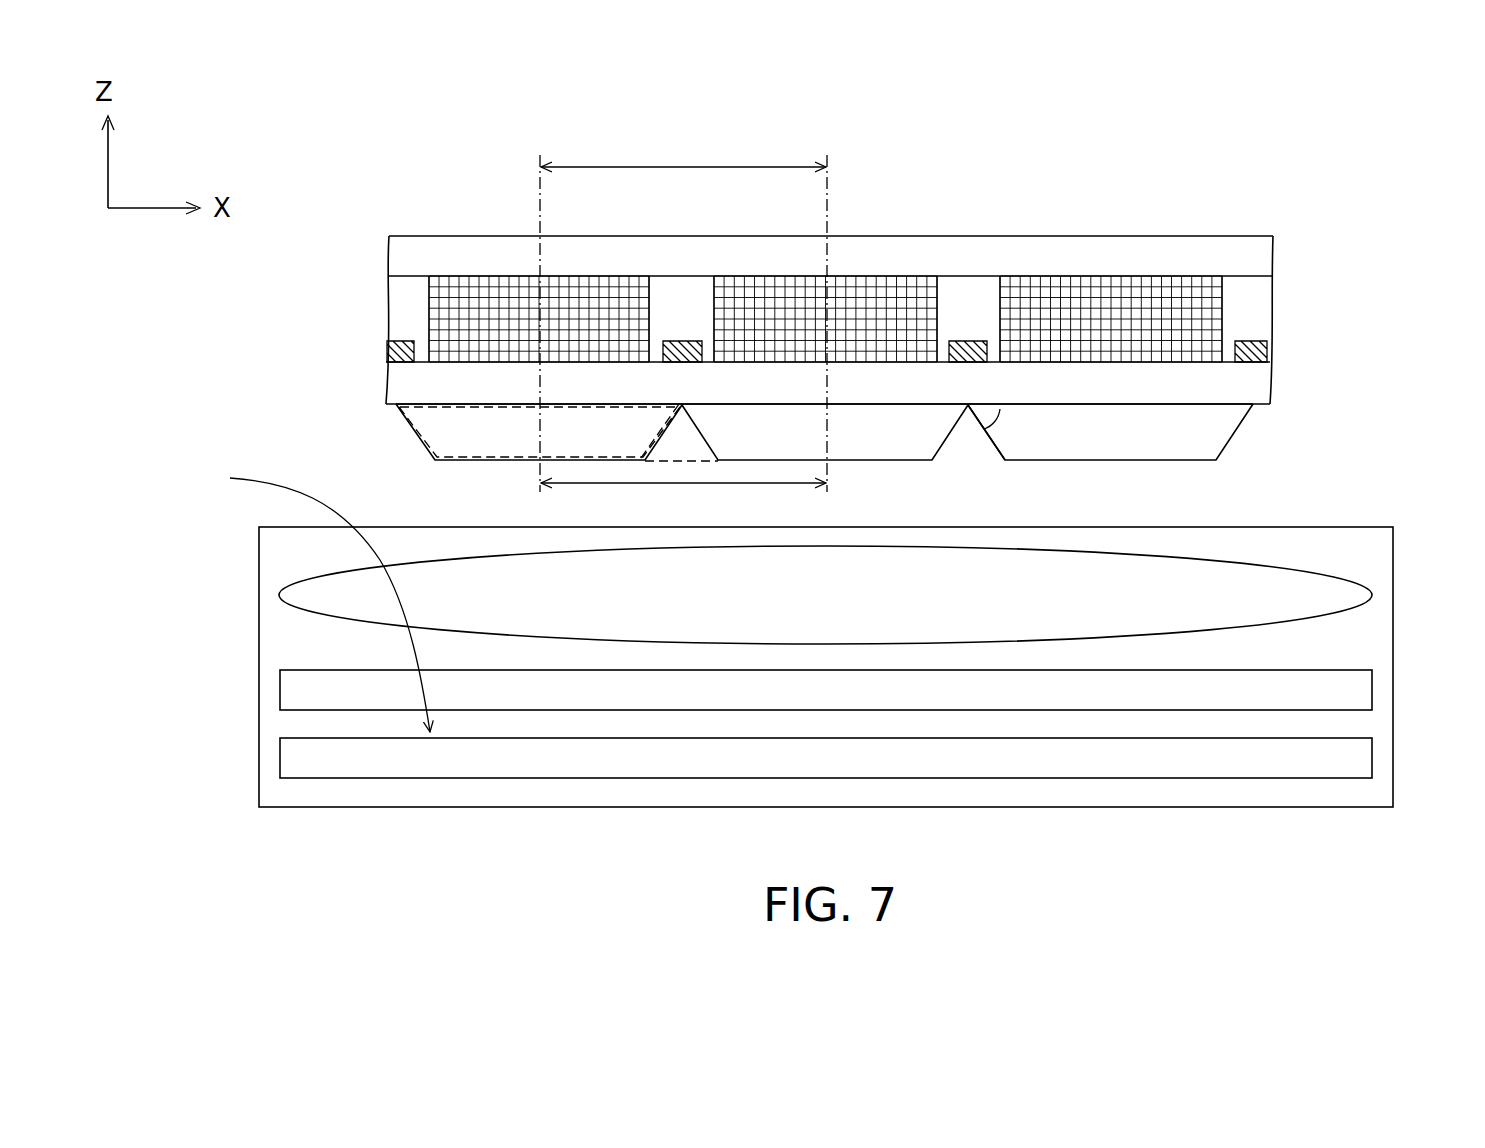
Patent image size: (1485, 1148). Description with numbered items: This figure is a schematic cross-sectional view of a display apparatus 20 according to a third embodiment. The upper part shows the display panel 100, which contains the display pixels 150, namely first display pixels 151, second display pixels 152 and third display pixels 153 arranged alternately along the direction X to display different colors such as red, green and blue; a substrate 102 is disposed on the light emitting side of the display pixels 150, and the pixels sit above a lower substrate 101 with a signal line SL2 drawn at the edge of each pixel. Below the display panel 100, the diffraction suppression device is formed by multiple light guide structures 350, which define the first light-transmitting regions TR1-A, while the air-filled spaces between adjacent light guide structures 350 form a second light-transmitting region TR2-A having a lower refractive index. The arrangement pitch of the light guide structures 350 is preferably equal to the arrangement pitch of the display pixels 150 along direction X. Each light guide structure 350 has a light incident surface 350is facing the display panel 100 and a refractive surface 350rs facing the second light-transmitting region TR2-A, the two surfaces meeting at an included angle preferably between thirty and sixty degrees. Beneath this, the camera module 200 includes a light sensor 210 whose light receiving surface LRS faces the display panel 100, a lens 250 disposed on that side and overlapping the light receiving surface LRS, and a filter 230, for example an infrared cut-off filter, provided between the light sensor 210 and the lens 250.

The display apparatus 20 is at (1437, 877).
The display panel 100 is at (824, 260).
The first substrate 101 is at (1258, 378).
The substrate 102 is at (1263, 254).
The display pixels 150 is at (825, 239).
The first display pixels 151 is at (484, 288).
The second display pixels 152 is at (872, 288).
The third display pixels 153 is at (1177, 295).
The second signal line SL2 is at (1265, 350).
The camera module 200 is at (823, 667).
The light sensor 210 is at (1353, 762).
The filter 230 is at (1350, 695).
The lens 250 is at (1360, 595).
The light guide structures 350 is at (1213, 432).
The light incident surface 350is is at (1074, 401).
The refractive surface 350rs is at (988, 443).
The first light-transmitting regions TR1-A is at (583, 420).
The second light-transmitting region TR2-A is at (684, 446).
The light receiving surface LRS is at (301, 597).